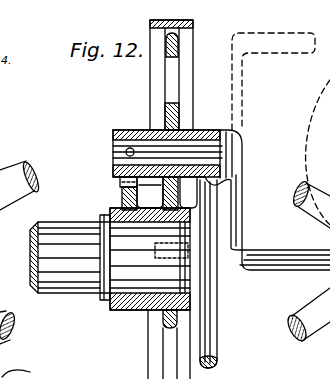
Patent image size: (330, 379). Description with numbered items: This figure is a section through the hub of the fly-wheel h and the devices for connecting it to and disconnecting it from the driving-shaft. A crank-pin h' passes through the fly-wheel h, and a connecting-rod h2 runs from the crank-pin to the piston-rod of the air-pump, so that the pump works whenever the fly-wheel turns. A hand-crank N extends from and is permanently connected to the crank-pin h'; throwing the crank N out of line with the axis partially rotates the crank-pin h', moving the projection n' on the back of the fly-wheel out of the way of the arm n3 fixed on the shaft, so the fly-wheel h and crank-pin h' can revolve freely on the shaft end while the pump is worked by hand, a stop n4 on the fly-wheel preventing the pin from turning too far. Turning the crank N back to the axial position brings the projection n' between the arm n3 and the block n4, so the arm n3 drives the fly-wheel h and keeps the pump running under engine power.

The fly-wheel h is at (170, 199).
The crank-pin h' is at (221, 191).
The connecting-rod h2 is at (217, 274).
The crank N is at (281, 149).
The projection n' is at (116, 198).
The arm n3 is at (124, 200).
The stop n4 is at (118, 180).